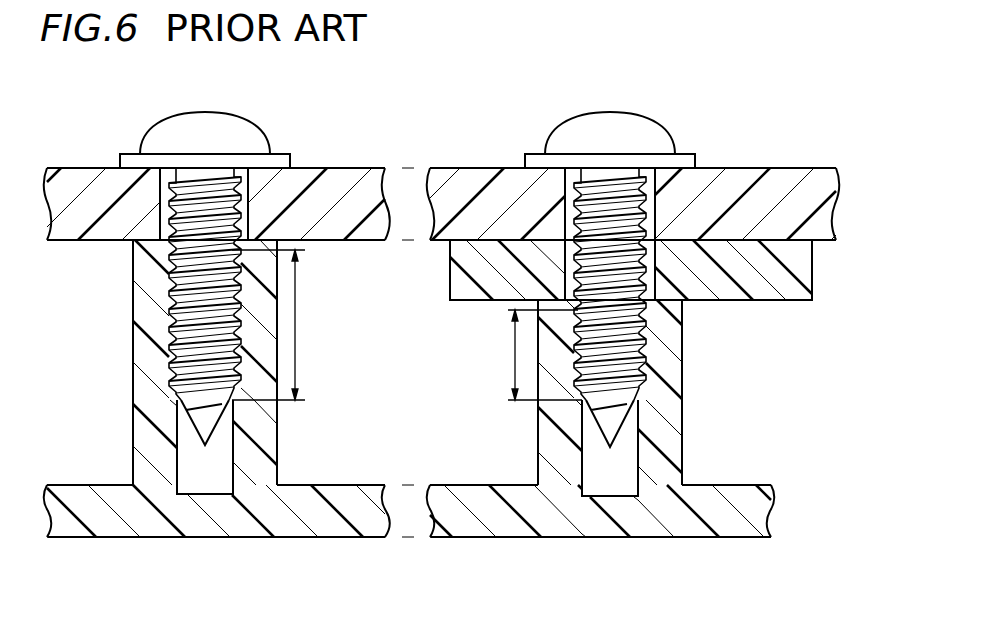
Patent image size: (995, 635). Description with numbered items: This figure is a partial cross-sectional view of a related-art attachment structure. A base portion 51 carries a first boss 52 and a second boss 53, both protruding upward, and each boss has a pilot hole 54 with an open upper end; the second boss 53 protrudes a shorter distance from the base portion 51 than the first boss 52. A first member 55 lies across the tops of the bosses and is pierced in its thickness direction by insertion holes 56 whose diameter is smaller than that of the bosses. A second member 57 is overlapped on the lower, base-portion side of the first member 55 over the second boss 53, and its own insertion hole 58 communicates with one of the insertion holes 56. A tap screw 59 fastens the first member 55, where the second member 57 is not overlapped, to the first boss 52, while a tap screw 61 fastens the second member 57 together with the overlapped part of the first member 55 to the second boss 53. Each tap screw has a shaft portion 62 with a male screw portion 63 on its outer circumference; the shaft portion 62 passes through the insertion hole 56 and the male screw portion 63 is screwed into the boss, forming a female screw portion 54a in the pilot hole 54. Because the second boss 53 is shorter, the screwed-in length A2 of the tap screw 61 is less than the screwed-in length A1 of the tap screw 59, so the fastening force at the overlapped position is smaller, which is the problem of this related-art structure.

The base portion 51 is at (439, 540).
The first boss 52 is at (145, 445).
The second boss 53 is at (673, 450).
The pilot hole 54 is at (235, 455).
The female screw portion 54a is at (172, 358).
The first member 55 is at (373, 242).
The insertion hole 56 is at (160, 152).
The second member 57 is at (812, 270).
The insertion hole 58 is at (672, 301).
The tap screw 59 is at (172, 122).
The tap screw 61 is at (648, 125).
The shaft portion 62 is at (175, 279).
The male screw portion 63 is at (170, 318).
The screwed length of tap screw 59 A1 is at (297, 327).
The screwed length of tap screw 61 A2 is at (516, 353).